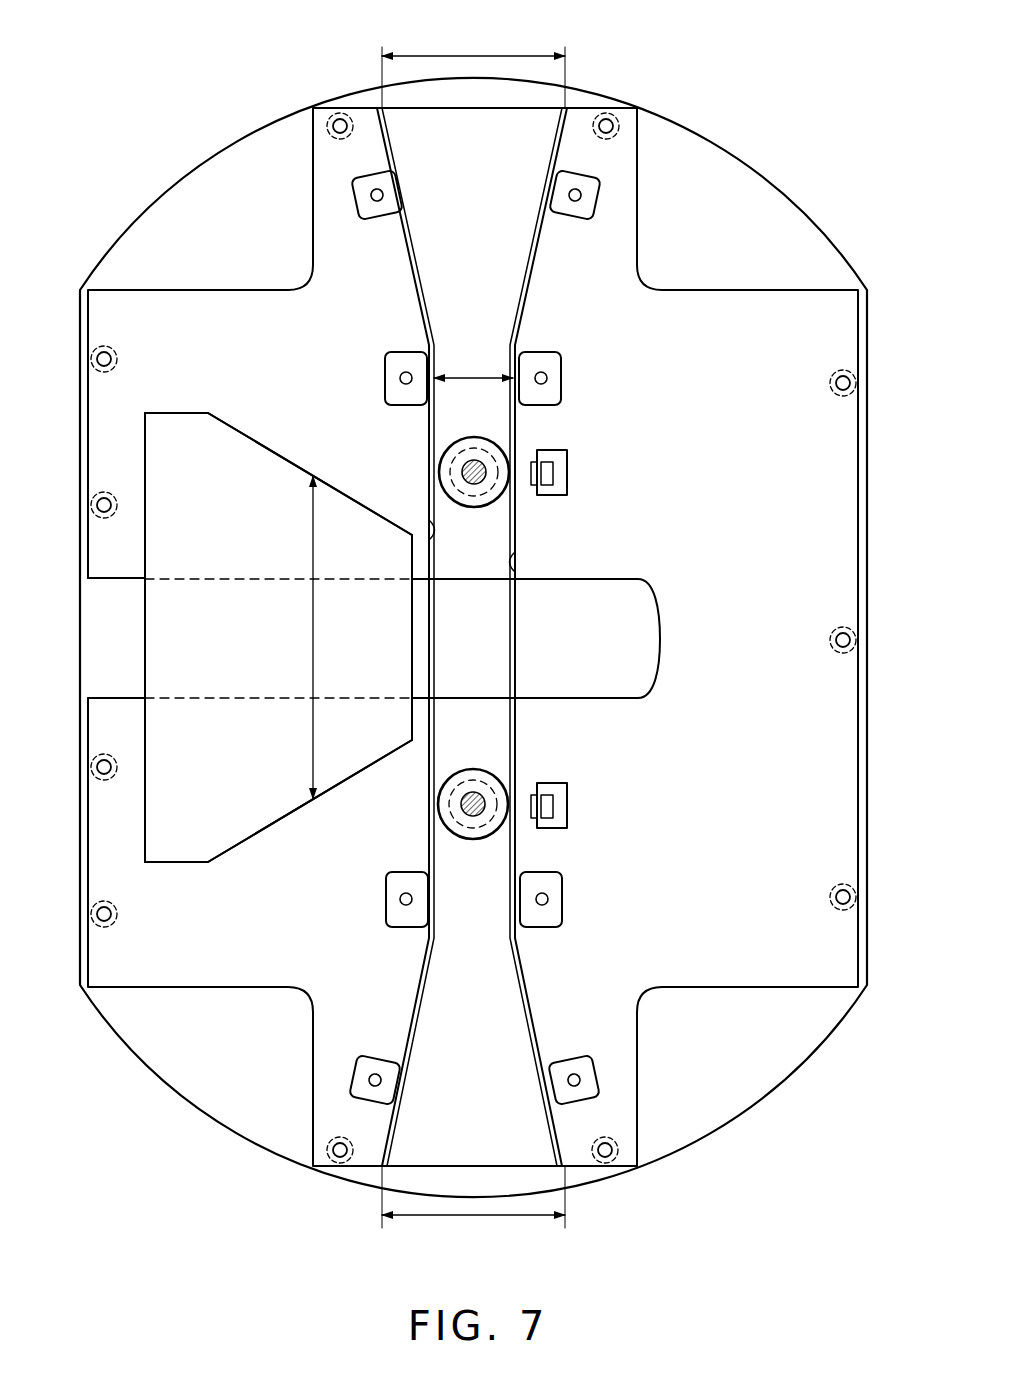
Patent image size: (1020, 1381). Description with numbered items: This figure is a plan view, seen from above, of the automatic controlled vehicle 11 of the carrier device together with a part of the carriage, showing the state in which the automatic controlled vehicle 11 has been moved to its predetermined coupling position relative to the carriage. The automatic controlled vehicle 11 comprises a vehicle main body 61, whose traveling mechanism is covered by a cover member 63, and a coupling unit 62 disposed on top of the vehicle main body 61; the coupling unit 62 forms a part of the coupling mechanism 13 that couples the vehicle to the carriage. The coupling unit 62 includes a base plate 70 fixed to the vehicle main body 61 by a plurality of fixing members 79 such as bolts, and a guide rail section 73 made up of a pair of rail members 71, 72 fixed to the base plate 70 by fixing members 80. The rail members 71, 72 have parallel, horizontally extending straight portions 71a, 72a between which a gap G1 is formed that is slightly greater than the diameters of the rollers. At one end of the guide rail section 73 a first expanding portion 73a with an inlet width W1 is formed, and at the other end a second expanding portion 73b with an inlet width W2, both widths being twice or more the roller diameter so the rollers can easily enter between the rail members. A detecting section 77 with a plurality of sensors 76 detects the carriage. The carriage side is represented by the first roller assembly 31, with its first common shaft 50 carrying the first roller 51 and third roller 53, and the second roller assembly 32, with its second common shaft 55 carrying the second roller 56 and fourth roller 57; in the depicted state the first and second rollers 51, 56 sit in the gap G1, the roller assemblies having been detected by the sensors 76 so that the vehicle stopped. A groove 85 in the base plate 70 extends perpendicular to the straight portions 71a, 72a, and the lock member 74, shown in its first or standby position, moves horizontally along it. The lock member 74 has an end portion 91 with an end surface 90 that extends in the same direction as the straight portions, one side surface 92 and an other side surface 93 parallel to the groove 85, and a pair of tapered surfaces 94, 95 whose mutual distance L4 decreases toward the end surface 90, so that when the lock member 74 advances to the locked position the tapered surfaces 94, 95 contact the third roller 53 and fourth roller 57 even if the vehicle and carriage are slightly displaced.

The automatic controlled vehicle 11 is at (737, 156).
The coupling mechanism 13 is at (330, 248).
The first roller assembly 31 is at (500, 448).
The second roller assembly 32 is at (438, 766).
The first common shaft 50 is at (474, 484).
The first roller 51 is at (488, 445).
The third roller 53 is at (452, 450).
The second common shaft 55 is at (474, 792).
The second roller 56 is at (493, 837).
The fourth roller 57 is at (463, 826).
The vehicle main body 61 is at (158, 1064).
The coupling unit 62 is at (228, 994).
The cover member 63 is at (752, 1108).
The base plate 70 is at (730, 302).
The rail member 71 is at (520, 462).
The straight portion 71a is at (520, 558).
The rail member 72 is at (427, 452).
The straight portion 72a is at (428, 527).
The guide rail section 73 is at (522, 718).
The first expanding portion 73a is at (474, 133).
The second expanding portion 73b is at (475, 1141).
The lock member 74 is at (146, 637).
The sensor 76 is at (555, 490).
The detecting section 77 is at (618, 478).
The fixing member 79 is at (340, 112).
The fixing member 80 is at (374, 203).
The groove 85 is at (605, 578).
The end surface 90 is at (412, 635).
The end portion 91 is at (400, 677).
The one side surface 92 is at (195, 412).
The other side surface 93 is at (195, 863).
The tapered surface 94 is at (270, 450).
The tapered surface 95 is at (278, 820).
The inlet width W1 is at (472, 52).
The inlet width W2 is at (472, 1220).
The gap G1 is at (472, 372).
The distance L4 is at (312, 637).